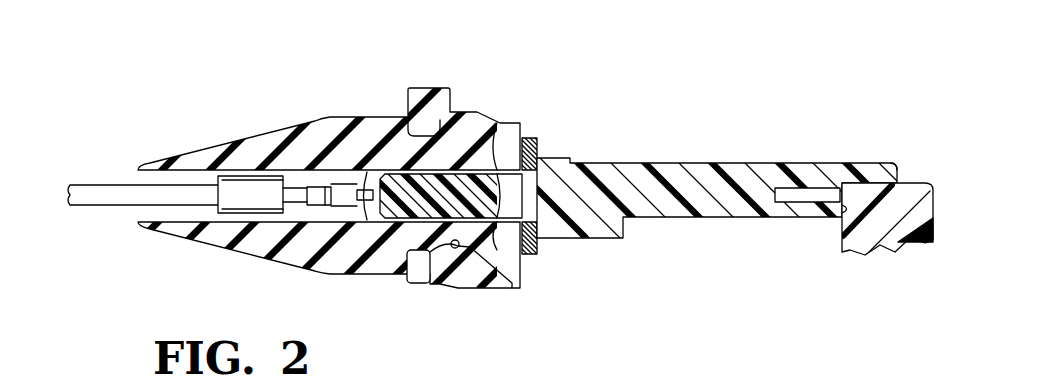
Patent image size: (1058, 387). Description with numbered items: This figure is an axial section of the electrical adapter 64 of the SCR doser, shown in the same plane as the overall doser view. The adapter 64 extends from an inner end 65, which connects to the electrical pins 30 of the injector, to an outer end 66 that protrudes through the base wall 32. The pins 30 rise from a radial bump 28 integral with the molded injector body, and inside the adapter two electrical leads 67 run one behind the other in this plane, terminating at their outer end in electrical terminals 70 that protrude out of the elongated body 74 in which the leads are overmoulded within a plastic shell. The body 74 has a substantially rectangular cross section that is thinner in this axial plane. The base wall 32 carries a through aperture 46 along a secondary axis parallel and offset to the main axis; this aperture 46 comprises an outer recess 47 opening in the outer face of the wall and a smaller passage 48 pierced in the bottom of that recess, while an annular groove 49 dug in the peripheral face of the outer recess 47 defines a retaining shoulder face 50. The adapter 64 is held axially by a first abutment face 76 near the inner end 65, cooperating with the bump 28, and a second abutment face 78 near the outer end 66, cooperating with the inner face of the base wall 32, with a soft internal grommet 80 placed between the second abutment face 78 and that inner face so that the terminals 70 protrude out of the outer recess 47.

The through aperture 46 is at (323, 195).
The smaller passage 48 is at (510, 138).
The base wall 32 is at (505, 270).
The electrical terminals 70 is at (247, 198).
The retaining shoulder face 50 is at (411, 283).
The annular groove 49 is at (446, 284).
The outer recess 47 is at (477, 287).
The outer end 66 is at (474, 168).
The soft internal grommet 80 is at (540, 150).
The second abutment face 78 is at (543, 233).
The electrical adapter 64 is at (731, 160).
The elongated body 74 is at (730, 160).
The electrical pins 30 is at (810, 192).
The radial bump 28 is at (882, 208).
The first abutment face 76 is at (847, 207).
The inner end 65 is at (879, 150).
The electrical leads 67 is at (676, 382).